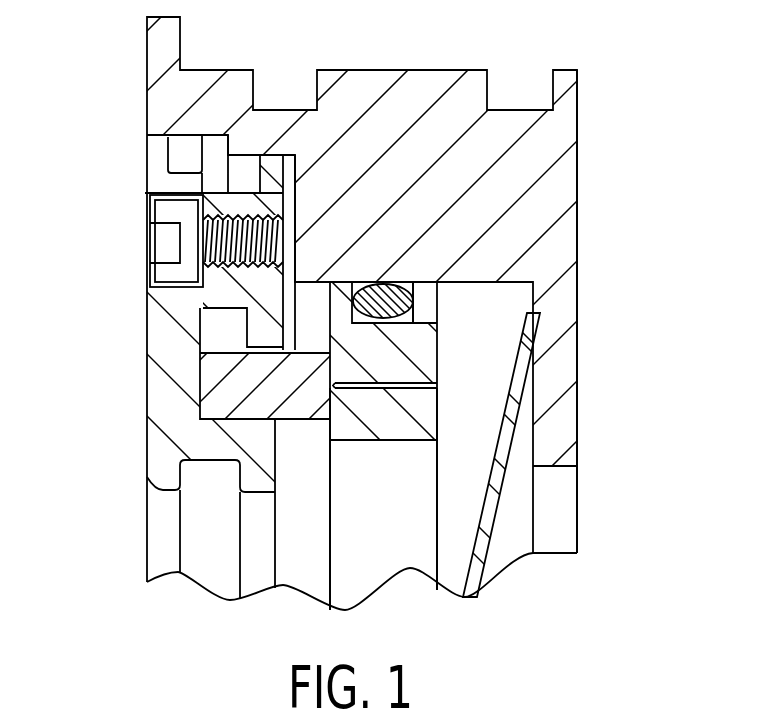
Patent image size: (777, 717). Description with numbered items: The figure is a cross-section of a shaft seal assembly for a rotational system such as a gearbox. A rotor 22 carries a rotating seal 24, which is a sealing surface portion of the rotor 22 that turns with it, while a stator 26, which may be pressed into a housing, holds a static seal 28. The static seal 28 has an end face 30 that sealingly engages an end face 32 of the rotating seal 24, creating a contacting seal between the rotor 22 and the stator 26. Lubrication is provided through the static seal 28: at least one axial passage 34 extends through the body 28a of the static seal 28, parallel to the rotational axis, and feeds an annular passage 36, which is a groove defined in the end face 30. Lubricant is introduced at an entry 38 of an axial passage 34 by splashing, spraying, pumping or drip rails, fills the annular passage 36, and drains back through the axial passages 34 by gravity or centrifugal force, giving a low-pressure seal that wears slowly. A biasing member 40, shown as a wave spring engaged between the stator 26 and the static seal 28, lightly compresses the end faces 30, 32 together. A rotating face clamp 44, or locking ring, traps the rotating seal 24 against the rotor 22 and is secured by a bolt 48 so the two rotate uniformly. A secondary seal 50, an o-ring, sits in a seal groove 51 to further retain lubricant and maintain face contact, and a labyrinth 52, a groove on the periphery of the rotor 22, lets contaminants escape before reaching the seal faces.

The rotor 22 is at (157, 395).
The rotating seal 24 is at (270, 398).
The stator 26 is at (568, 482).
The static seal 28 is at (437, 347).
The body of the static seal 28a is at (395, 298).
The end face of the static seal 30 is at (330, 378).
The end face of the rotating seal 32 is at (332, 388).
The axial passage 34 is at (410, 388).
The annular passage 36 is at (335, 385).
The entry 38 is at (410, 385).
The biasing member 40 is at (488, 562).
The rotating face clamp 44 is at (237, 199).
The bolt 48 is at (170, 211).
The secondary seal 50 is at (437, 278).
The seal groove 51 is at (437, 300).
The labyrinth 52 is at (180, 158).